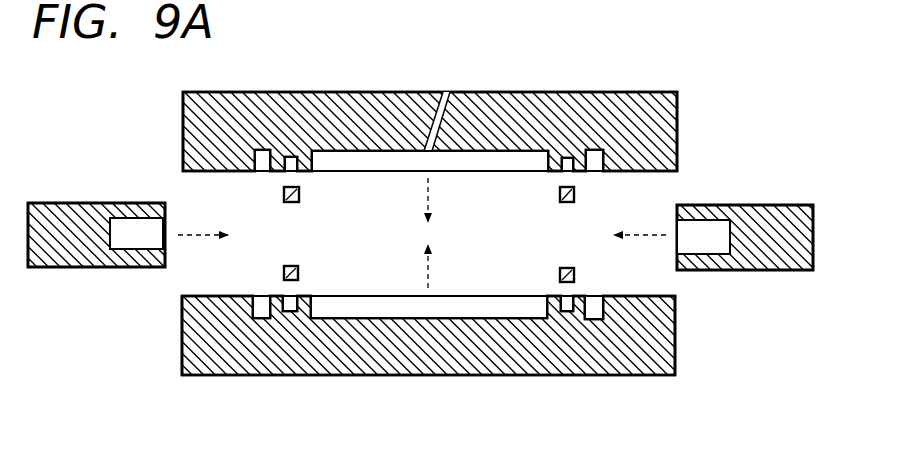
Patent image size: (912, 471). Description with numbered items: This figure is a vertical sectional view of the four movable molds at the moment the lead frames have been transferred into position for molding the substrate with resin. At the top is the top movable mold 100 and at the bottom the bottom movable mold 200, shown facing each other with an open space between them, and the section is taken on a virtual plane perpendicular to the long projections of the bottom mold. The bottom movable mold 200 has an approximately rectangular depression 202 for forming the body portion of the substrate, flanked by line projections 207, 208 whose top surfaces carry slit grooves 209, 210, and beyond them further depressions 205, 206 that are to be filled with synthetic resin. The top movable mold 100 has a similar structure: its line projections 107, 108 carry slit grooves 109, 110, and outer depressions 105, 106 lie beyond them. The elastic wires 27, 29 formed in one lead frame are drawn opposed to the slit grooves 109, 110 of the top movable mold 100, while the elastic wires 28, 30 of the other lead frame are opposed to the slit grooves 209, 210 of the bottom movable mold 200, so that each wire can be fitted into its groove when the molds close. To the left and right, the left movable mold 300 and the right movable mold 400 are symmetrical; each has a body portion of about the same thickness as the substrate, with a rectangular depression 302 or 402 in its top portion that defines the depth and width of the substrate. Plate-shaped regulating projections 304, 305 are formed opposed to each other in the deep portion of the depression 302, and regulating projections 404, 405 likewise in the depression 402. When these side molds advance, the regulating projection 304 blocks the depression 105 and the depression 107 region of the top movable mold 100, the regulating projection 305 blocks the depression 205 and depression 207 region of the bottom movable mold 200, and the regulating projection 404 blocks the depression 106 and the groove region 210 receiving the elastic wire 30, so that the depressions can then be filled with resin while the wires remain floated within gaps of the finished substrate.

The top movable mold 100 is at (251, 100).
The depression 105 is at (260, 172).
The depression 106 is at (600, 173).
The line projection 107 is at (306, 170).
The line projection 108 is at (552, 173).
The slit groove 109 is at (288, 172).
The slit groove 110 is at (572, 173).
The elastic wire 27 is at (289, 204).
The elastic wire 28 is at (298, 266).
The elastic wire 29 is at (560, 200).
The elastic wire 30 is at (560, 272).
The bottom movable mold 200 is at (398, 366).
The depression 202 is at (397, 313).
The depression 205 is at (258, 294).
The depression 206 is at (597, 297).
The line projection 207 is at (303, 295).
The line projection 208 is at (548, 295).
The slit groove 209 is at (287, 295).
The slit groove 210 is at (572, 297).
The left movable mold 300 is at (57, 208).
The rectangular depression 302 is at (122, 246).
The regulating projection 304 is at (137, 212).
The regulating projection 305 is at (133, 258).
The right movable mold 400 is at (779, 211).
The rectangular depression 402 is at (688, 249).
The regulating projection 404 is at (703, 213).
The regulating projection 405 is at (705, 259).